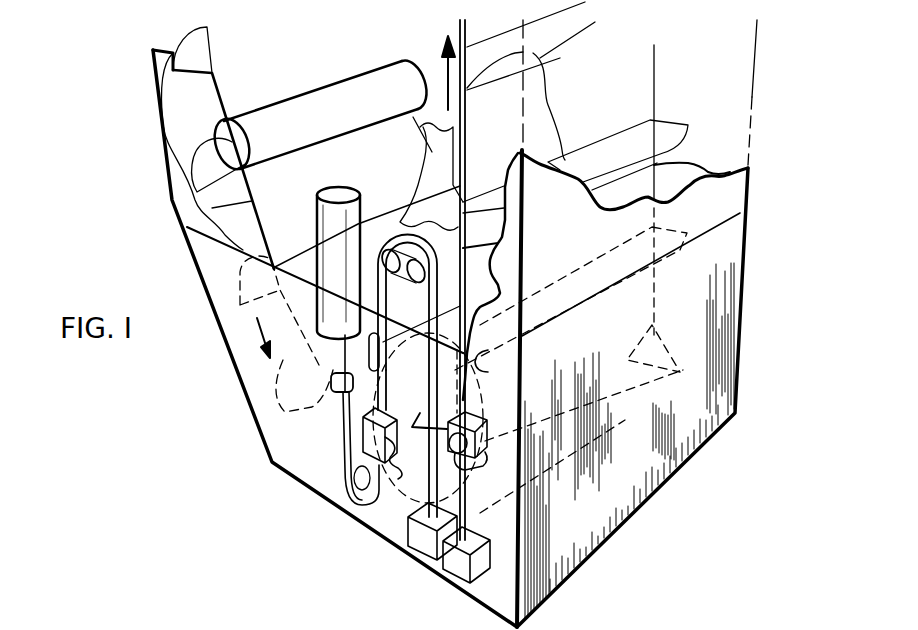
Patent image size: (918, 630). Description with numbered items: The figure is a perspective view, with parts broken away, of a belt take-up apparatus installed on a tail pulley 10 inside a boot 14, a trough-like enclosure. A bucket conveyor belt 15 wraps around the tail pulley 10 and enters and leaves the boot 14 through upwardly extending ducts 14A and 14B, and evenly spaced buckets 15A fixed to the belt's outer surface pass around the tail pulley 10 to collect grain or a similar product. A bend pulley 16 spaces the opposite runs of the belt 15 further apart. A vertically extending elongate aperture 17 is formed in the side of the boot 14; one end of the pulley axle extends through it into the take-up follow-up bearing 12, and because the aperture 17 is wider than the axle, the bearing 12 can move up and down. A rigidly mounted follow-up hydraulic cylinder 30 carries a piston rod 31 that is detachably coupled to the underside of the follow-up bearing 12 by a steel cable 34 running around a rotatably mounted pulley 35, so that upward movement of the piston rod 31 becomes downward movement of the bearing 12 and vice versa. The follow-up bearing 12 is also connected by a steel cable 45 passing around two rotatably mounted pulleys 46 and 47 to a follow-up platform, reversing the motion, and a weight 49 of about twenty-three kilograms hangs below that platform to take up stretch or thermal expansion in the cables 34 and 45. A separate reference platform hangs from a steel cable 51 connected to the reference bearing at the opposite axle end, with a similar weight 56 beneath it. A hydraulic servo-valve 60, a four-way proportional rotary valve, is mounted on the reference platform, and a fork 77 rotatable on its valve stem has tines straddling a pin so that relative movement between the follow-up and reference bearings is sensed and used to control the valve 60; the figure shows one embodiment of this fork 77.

The tail pulley 10 is at (420, 411).
The take-up follow-up bearing 12 is at (396, 458).
The boot 14 is at (627, 482).
The upwardly extending duct 14A is at (178, 204).
The upwardly extending duct 14B is at (746, 90).
The bucket conveyor belt 15 is at (376, 162).
The buckets 15A is at (218, 137).
The bend pulley 16 is at (273, 112).
The vertically extending elongate aperture 17 is at (387, 372).
The follow-up hydraulic cylinder 30 is at (322, 192).
The piston rod 31 is at (287, 383).
The steel cable 34 is at (340, 442).
The pulley 35 is at (345, 493).
The steel cable 45 is at (414, 310).
The pulley 46 is at (447, 280).
The pulley 47 is at (377, 255).
The weight 49 is at (406, 538).
The steel cable 51 is at (496, 343).
The weight 56 is at (443, 577).
The hydraulic servo-valve 60 is at (484, 468).
The fork 77 is at (472, 412).